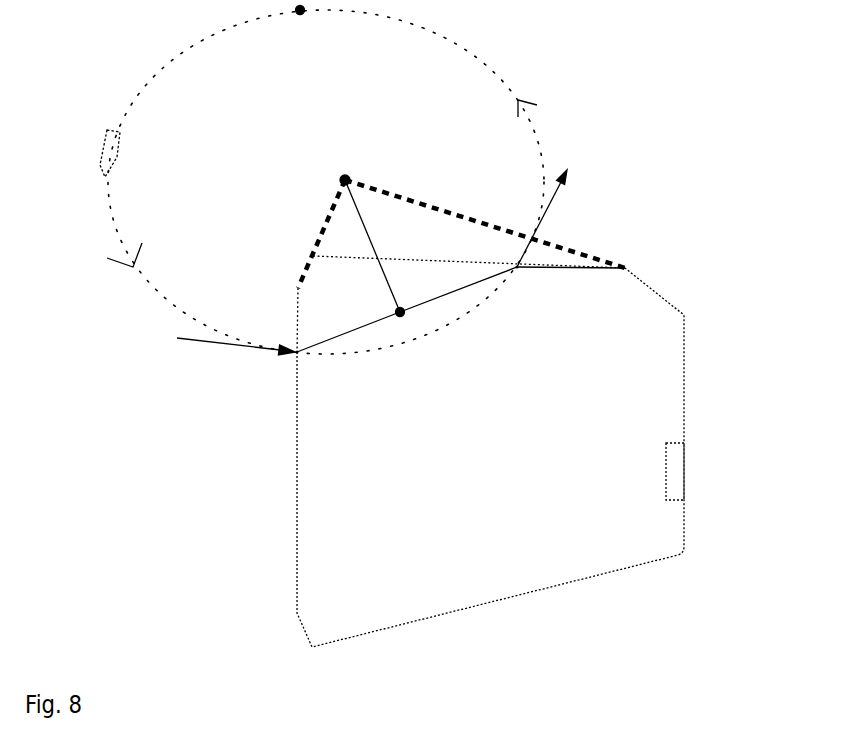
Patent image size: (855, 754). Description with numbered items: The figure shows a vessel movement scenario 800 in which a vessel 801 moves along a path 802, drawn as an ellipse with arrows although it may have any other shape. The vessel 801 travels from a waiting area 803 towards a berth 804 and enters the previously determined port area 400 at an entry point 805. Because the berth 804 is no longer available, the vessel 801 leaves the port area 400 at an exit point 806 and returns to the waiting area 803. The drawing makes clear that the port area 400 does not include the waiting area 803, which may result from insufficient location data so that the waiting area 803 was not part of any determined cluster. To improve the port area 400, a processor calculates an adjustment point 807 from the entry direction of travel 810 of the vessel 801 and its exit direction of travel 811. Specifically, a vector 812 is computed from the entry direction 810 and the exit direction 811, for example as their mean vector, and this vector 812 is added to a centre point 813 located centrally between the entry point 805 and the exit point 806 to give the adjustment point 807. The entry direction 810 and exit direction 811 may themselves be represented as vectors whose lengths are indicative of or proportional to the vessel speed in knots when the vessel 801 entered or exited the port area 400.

The vessel movement scenario 800 is at (685, 62).
The vessel 801 is at (112, 152).
The path 802 is at (157, 72).
The waiting area 803 is at (297, 13).
The berth 804 is at (723, 457).
The entry point 805 is at (290, 343).
The exit point 806 is at (522, 277).
The adjustment point 807 is at (340, 172).
The entry direction 810 is at (253, 348).
The exit direction 811 is at (552, 205).
The vector 812 is at (365, 218).
The centre point 813 is at (395, 310).
The port area 400 is at (303, 462).